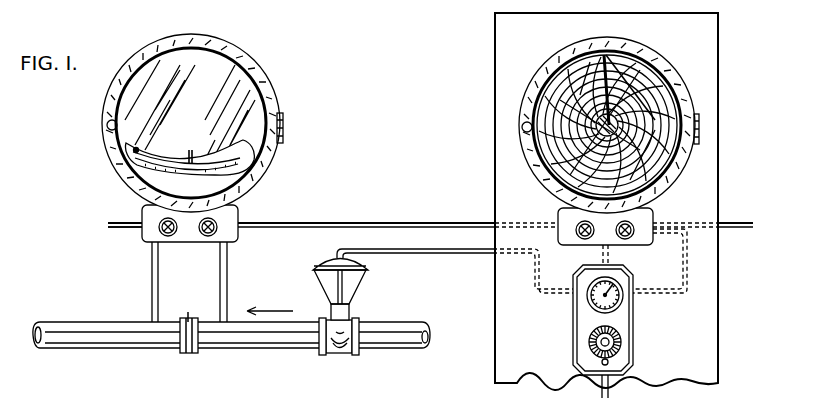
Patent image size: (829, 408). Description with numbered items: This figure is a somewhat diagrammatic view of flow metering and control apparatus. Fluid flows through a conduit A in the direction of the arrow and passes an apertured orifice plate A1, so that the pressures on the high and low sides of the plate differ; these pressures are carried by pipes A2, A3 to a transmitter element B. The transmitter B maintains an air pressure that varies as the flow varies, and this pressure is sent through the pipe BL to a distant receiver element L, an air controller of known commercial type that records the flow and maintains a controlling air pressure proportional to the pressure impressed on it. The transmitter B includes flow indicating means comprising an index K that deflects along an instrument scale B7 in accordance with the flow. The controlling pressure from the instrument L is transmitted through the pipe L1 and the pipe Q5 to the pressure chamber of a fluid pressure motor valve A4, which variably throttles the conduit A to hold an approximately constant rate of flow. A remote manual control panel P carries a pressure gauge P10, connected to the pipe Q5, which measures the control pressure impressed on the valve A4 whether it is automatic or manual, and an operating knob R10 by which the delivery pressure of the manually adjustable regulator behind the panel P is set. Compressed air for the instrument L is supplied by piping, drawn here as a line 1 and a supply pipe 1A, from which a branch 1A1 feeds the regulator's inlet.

The conduit A is at (91, 320).
The apertured orifice plate A1 is at (178, 354).
The pipe A2 is at (228, 283).
The pipe A3 is at (152, 281).
The fluid pressure motor valve A4 is at (338, 354).
The transmitter element B is at (108, 144).
The instrument scale B7 is at (222, 174).
The index K is at (128, 160).
The pipe BL is at (326, 222).
The pipe 1 is at (120, 228).
The pipe outlet 1A is at (728, 226).
The branch of compressed air supply piping 1A1 is at (690, 270).
The pipe Q5 is at (420, 254).
The receiver element L is at (540, 76).
The pipe L1 is at (612, 257).
The remote manual control panel P is at (634, 325).
The pressure gauge P10 is at (590, 300).
The operating knob R10 is at (597, 345).